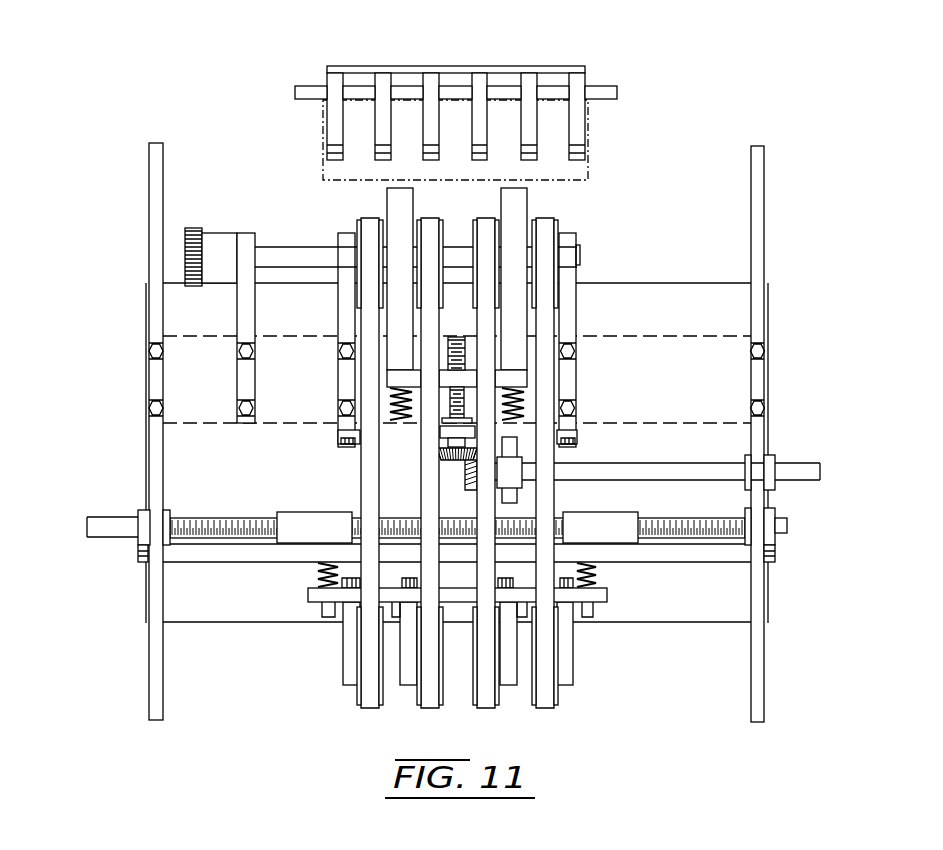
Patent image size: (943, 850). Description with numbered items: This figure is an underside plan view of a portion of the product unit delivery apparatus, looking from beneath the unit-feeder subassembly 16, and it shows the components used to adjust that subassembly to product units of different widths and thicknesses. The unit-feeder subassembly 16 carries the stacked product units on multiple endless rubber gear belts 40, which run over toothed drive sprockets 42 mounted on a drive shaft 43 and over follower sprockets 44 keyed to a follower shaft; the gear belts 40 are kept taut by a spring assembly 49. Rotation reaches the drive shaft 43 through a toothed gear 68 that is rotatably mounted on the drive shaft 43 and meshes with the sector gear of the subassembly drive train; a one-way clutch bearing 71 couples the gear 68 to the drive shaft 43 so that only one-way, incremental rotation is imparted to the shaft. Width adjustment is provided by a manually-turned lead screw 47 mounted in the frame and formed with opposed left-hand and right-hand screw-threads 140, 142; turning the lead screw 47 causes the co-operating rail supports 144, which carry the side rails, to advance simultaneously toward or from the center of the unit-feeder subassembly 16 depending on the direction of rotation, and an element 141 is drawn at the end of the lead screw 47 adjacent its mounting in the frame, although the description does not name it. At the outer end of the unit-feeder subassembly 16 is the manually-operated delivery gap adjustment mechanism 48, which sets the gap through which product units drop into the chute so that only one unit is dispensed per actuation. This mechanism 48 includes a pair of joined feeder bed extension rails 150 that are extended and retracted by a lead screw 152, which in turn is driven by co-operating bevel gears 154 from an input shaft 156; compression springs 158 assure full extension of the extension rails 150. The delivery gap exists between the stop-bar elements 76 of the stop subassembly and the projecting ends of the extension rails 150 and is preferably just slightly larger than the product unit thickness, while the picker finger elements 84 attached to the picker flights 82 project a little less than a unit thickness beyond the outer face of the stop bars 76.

The unit-feeder subassembly 16 is at (275, 680).
The endless rubber gear belts 40 is at (428, 225).
The toothed drive sprockets 42 is at (359, 222).
The drive shaft 43 is at (289, 250).
The follower sprockets 44 is at (362, 705).
The lead screw 47 is at (113, 515).
The delivery gap adjustment mechanism 48 is at (789, 462).
The spring assembly 49 is at (586, 650).
The toothed gear 68 is at (188, 228).
The one-way clutch bearing 71 is at (225, 243).
The stop-bar elements 76 is at (360, 88).
The product picker flights 82 is at (501, 60).
The picker finger elements 84 is at (430, 128).
The left-hand screw-threads 140 is at (242, 522).
The nut 141 is at (127, 528).
The right-hand screw-threads 142 is at (670, 530).
The rail supports 144 is at (305, 522).
The feeder bed extension rails 150 is at (397, 313).
The lead screw 152 is at (457, 337).
The bevel gears 154 is at (465, 482).
The input shaft 156 is at (680, 470).
The compression springs 158 is at (395, 393).